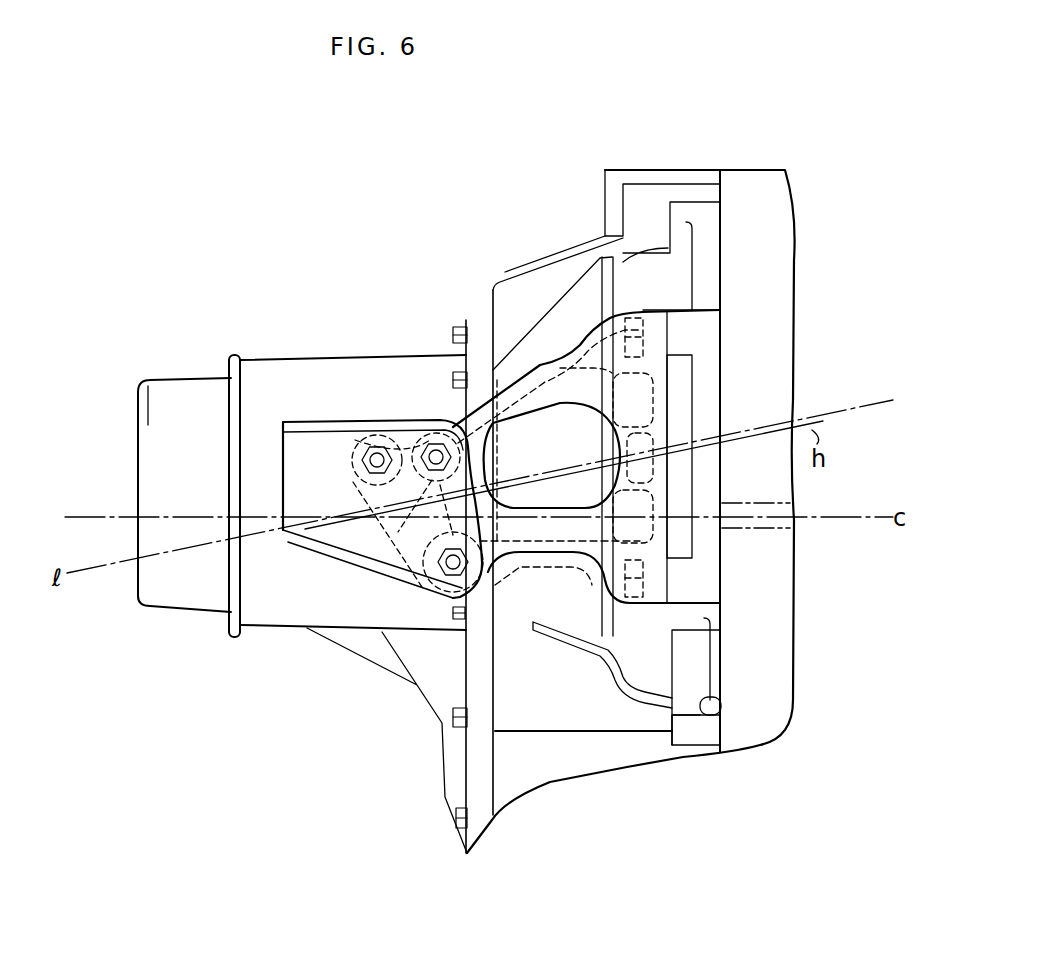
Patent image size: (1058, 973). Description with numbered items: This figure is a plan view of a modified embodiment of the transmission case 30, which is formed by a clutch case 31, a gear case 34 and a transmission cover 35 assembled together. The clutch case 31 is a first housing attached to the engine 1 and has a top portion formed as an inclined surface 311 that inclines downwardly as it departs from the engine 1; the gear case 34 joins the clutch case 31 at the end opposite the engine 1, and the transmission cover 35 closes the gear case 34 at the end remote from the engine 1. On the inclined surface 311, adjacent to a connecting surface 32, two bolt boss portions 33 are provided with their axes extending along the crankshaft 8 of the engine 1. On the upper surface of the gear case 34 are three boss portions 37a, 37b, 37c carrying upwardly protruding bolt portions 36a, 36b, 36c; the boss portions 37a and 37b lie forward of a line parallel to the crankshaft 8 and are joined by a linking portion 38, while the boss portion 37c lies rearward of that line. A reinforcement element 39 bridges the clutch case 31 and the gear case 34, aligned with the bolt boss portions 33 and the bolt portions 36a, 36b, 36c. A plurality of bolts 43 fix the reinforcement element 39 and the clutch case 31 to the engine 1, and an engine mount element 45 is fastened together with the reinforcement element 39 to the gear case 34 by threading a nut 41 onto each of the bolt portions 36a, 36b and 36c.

The engine 1 is at (745, 170).
The crankshaft 8 is at (763, 500).
The transmission case 30 is at (647, 170).
The clutch case 31 is at (603, 202).
The inclined surface 311 is at (568, 305).
The connecting surface 32 is at (723, 735).
The bolt boss portions 33 is at (703, 325).
The gear case 34 is at (375, 355).
The transmission cover 35 is at (187, 378).
The bolt portion 36a is at (436, 449).
The bolt portion 36b is at (372, 452).
The bolt portion 36c is at (448, 577).
The boss portion 37a is at (396, 533).
The boss portion 37b is at (352, 483).
The boss portion 37c is at (408, 592).
The linking portion 38 is at (402, 432).
The reinforcement element 39 is at (583, 562).
The nut 41 is at (360, 463).
The bolts 43 is at (637, 313).
The engine mount element 45 is at (303, 420).